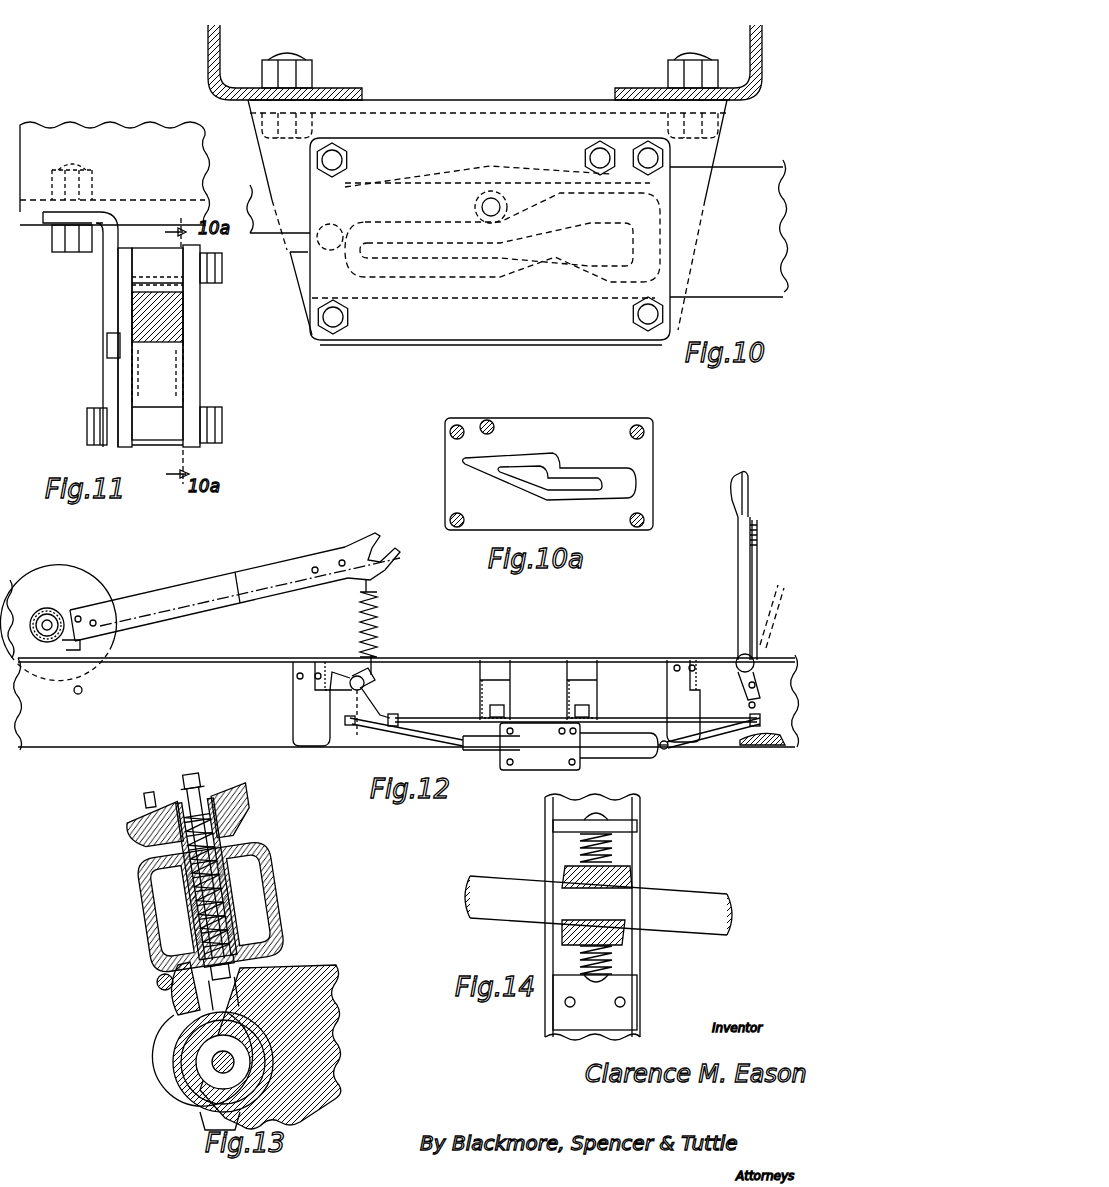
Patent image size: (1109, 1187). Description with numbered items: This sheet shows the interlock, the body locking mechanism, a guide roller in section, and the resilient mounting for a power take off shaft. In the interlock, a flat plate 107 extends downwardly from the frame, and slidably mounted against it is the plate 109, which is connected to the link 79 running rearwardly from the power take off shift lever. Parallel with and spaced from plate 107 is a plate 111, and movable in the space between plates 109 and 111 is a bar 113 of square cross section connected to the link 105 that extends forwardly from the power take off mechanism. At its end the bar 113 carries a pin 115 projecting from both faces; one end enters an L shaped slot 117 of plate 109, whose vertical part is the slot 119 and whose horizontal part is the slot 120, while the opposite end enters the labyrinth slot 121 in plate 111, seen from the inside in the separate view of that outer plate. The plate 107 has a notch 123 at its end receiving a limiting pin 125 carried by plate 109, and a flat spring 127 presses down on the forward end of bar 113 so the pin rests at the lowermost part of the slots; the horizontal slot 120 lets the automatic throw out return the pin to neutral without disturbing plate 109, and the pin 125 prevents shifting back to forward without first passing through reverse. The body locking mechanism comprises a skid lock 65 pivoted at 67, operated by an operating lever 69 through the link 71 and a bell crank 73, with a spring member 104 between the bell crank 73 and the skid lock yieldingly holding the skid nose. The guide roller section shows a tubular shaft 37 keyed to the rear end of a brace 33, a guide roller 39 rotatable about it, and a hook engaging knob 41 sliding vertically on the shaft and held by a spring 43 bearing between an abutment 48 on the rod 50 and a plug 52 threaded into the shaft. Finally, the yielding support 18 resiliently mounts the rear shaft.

In FIG. 14, the yielding support 18 is at (625, 876).
In FIG. 13, the brace 33 is at (312, 978).
In FIG. 13, the tubular shaft 37 is at (183, 1003).
In FIG. 13, the guide roller 39 is at (144, 920).
In FIG. 13, the hook engaging knob 41 is at (150, 822).
In FIG. 13, the spring 43 is at (226, 855).
In FIG. 13, the abutment 48 is at (222, 982).
In FIG. 13, the rod 50 is at (206, 878).
In FIG. 13, the plug 52 is at (235, 790).
In FIG. 12, the skid lock 65 is at (283, 575).
In FIG. 12, the pivot 67 is at (50, 618).
In FIG. 12, the operating lever 69 is at (742, 572).
In FIG. 12, the link 71 is at (628, 718).
In FIG. 12, the bell crank 73 is at (372, 712).
In FIG. 12, the link 79 is at (715, 745).
In FIG. 12, the spring member 104 is at (378, 622).
In FIG. 12, the link 105 is at (375, 732).
In FIG. 11, the flat plate 107 is at (108, 303).
In FIG. 10, the plate 109 is at (757, 282).
In FIG. 11, the plate 109 is at (125, 382).
In FIG. 12, the plate 109 is at (598, 752).
In FIG. 11, the plate 111 is at (195, 295).
In FIG. 10, the bar 113 is at (262, 187).
In FIG. 11, the bar 113 is at (170, 338).
In FIG. 10, the pin 115 is at (498, 196).
In FIG. 11, the pin 115 is at (107, 338).
In FIG. 10, the L shaped slot 117 is at (648, 338).
In FIG. 10, the vertical slot part 119 is at (665, 240).
In FIG. 10, the horizontal slot part 120 is at (590, 197).
In FIG. 10, the labyrinth slot 121 is at (440, 268).
In FIG. 10A, the labyrinth slot 121 is at (624, 480).
In FIG. 10, the notch 123 is at (292, 262).
In FIG. 10, the limiting pin 125 is at (314, 238).
In FIG. 10, the flat spring 127 is at (430, 166).